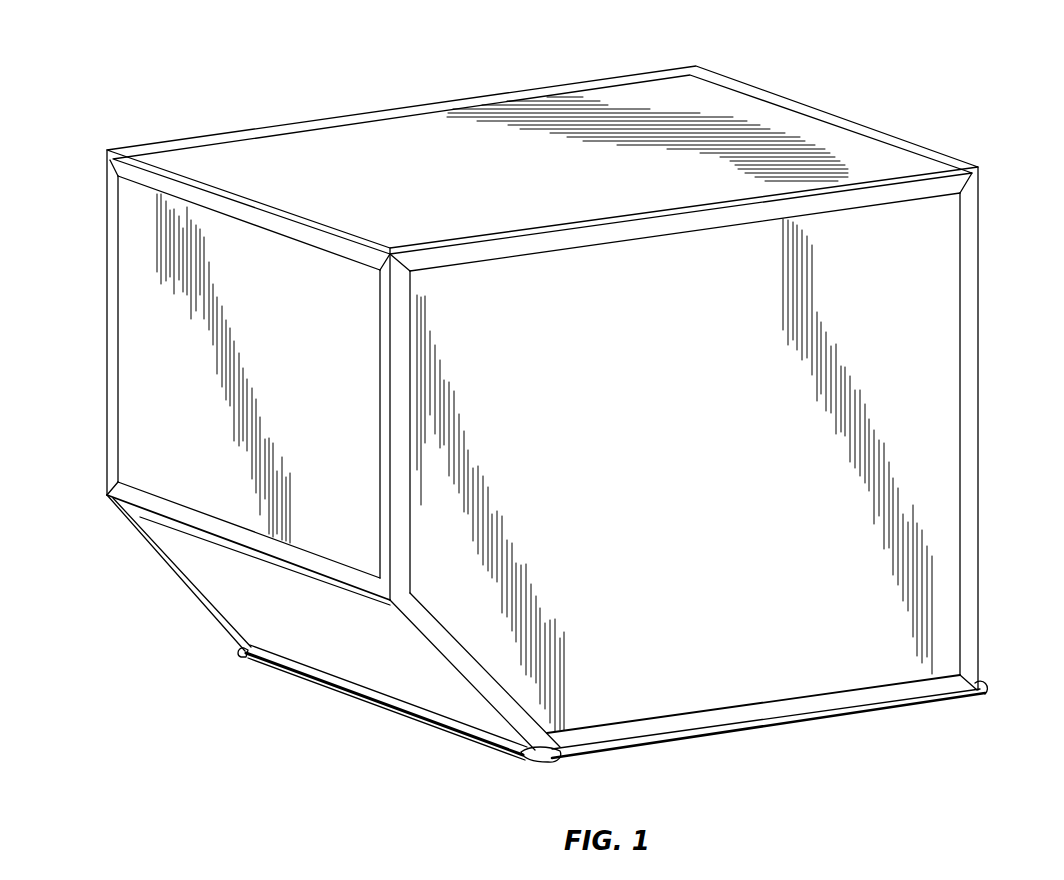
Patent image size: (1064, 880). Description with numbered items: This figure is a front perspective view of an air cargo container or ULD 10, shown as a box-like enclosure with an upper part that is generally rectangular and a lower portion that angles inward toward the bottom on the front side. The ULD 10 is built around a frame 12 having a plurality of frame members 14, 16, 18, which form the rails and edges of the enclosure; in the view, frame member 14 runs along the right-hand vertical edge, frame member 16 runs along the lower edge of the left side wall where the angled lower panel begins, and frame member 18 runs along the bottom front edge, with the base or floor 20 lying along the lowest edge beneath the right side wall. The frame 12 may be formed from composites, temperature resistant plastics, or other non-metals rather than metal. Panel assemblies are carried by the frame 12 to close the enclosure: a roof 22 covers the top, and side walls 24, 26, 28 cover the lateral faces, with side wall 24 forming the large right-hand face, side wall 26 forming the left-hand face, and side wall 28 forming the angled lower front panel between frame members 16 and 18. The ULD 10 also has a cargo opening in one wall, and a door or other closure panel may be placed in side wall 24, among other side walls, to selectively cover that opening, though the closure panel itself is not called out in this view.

The air cargo container 10 is at (328, 68).
The frame 12 is at (905, 133).
The frame member 14 is at (968, 420).
The frame member 16 is at (223, 528).
The frame member 18 is at (403, 710).
The base or floor 20 is at (757, 735).
The roof 22 is at (519, 173).
The side wall 24 is at (669, 495).
The side wall 26 is at (257, 382).
The side wall 28 is at (311, 632).